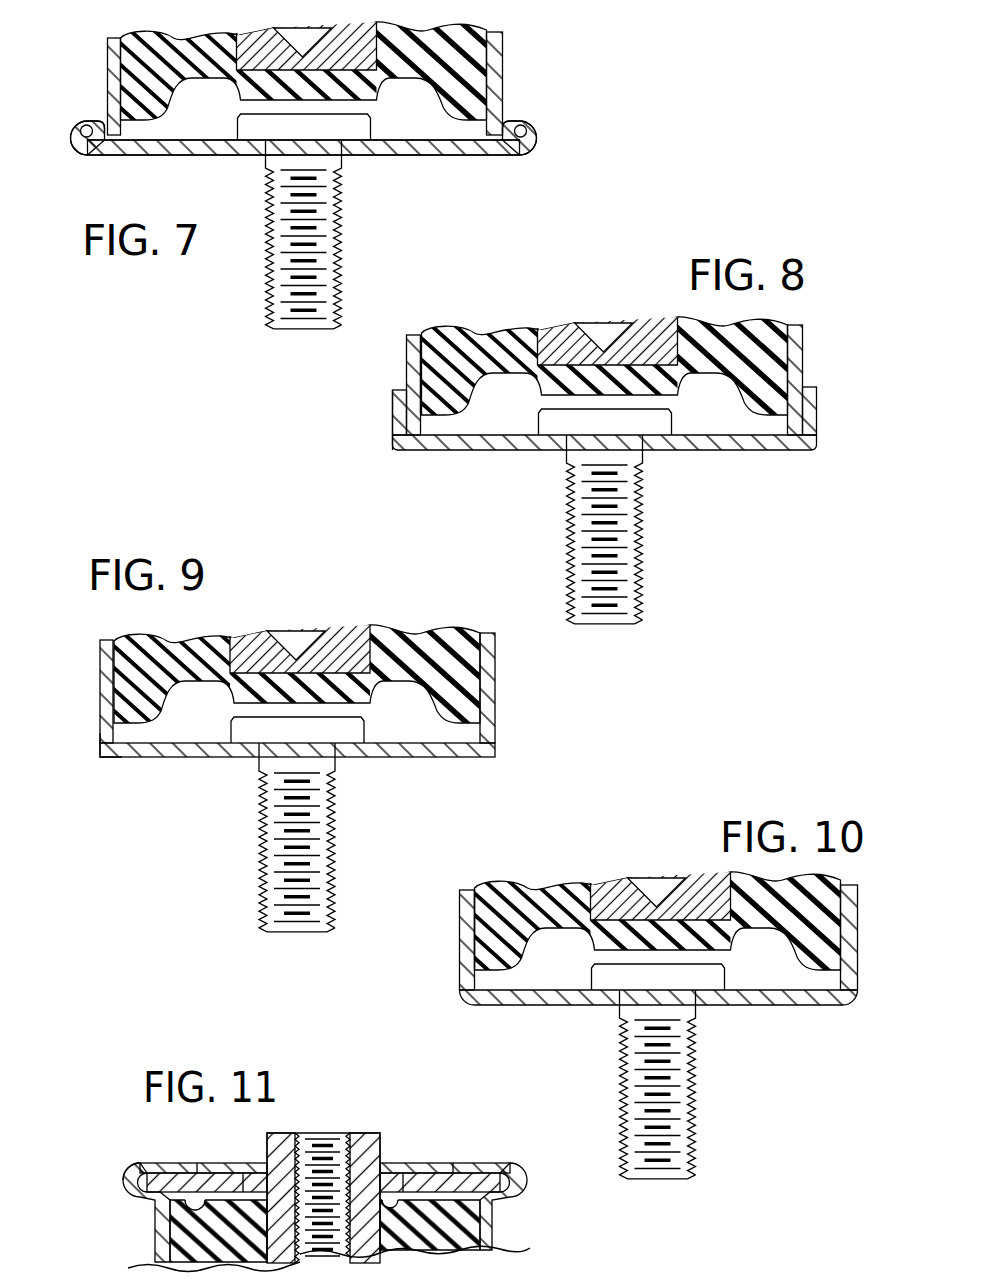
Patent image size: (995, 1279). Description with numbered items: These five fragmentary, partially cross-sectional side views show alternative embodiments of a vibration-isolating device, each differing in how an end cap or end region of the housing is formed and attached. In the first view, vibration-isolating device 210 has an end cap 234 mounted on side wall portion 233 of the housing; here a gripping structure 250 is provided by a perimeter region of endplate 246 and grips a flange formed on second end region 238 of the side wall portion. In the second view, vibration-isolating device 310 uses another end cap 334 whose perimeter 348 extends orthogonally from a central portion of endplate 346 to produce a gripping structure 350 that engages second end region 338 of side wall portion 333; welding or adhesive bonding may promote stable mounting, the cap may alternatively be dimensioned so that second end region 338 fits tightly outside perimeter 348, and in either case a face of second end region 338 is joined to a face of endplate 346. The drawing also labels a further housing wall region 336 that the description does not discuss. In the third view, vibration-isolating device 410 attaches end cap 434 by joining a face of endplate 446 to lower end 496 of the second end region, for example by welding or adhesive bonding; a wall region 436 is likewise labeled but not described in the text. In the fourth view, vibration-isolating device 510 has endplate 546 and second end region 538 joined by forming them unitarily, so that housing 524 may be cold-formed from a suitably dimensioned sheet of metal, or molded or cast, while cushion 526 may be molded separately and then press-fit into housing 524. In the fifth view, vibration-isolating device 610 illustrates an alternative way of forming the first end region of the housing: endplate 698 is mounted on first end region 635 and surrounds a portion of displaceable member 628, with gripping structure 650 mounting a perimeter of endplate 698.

In FIG. 7, the vibration-isolating device 210 is at (297, 175).
In FIG. 7, the side wall portion 233 is at (534, 93).
In FIG. 7, the second end region 238 is at (88, 86).
In FIG. 7, the gripping structure 250 is at (76, 157).
In FIG. 7, the endplate 246 is at (304, 173).
In FIG. 7, the end cap 234 is at (254, 234).
In FIG. 8, the vibration-isolating device 310 is at (605, 453).
In FIG. 8, the housing side wall 336 is at (392, 366).
In FIG. 8, the second end region 338 is at (388, 374).
In FIG. 8, the perimeter 348 is at (371, 433).
In FIG. 8, the gripping structure 350 is at (386, 450).
In FIG. 8, the endplate 346 is at (605, 466).
In FIG. 8, the end cap 334 is at (559, 529).
In FIG. 8, the side wall portion 333 is at (824, 374).
In FIG. 9, the vibration-isolating device 410 is at (272, 766).
In FIG. 9, the housing side wall 436 is at (82, 691).
In FIG. 9, the lower end 496 is at (90, 773).
In FIG. 9, the endplate 446 is at (294, 790).
In FIG. 9, the end cap 434 is at (241, 837).
In FIG. 10, the vibration-isolating device 510 is at (644, 1014).
In FIG. 10, the cushion 526 is at (638, 910).
In FIG. 10, the housing 524 is at (436, 935).
In FIG. 10, the second end region 538 is at (442, 939).
In FIG. 10, the endplate 546 is at (659, 1025).
In FIG. 11, the vibration-isolating device 610 is at (137, 1150).
In FIG. 11, the displaceable member 628 is at (283, 1143).
In FIG. 11, the endplate 698 is at (462, 1183).
In FIG. 11, the first end region 635 is at (510, 1163).
In FIG. 11, the gripping structure 650 is at (517, 1185).